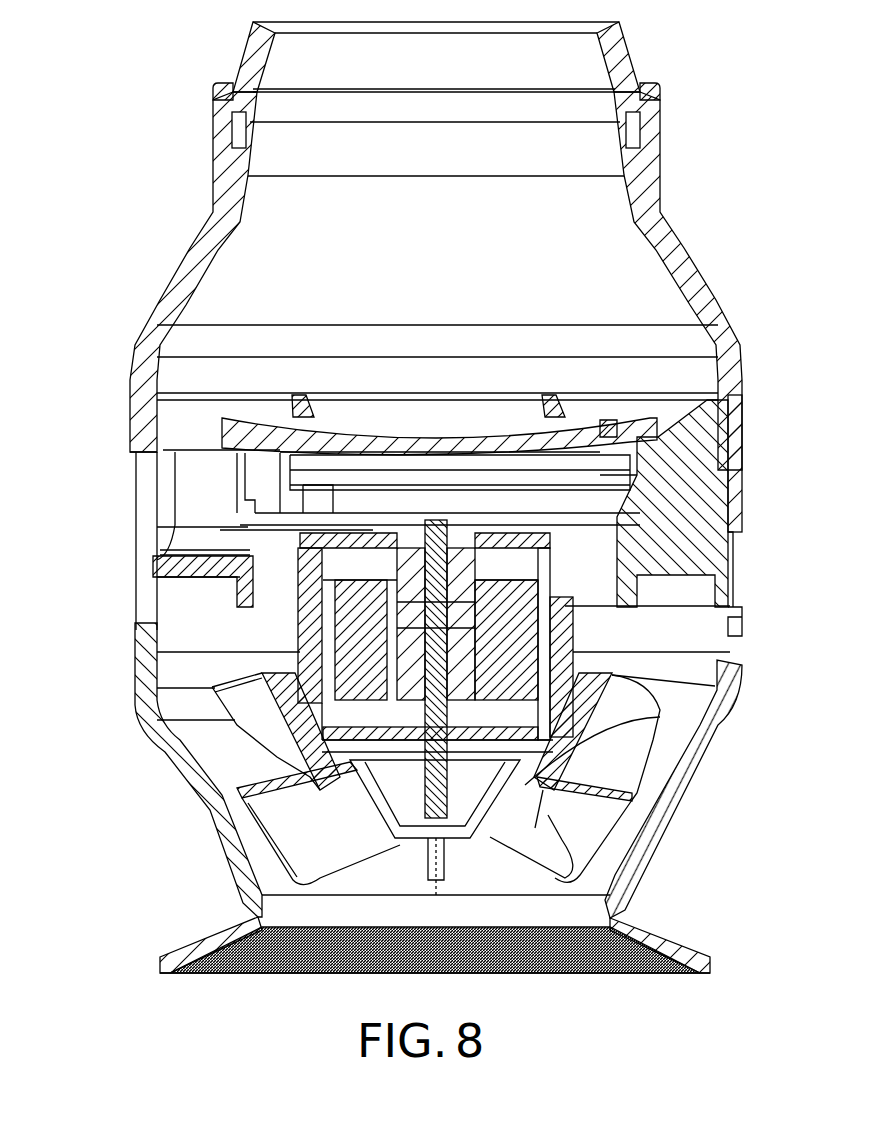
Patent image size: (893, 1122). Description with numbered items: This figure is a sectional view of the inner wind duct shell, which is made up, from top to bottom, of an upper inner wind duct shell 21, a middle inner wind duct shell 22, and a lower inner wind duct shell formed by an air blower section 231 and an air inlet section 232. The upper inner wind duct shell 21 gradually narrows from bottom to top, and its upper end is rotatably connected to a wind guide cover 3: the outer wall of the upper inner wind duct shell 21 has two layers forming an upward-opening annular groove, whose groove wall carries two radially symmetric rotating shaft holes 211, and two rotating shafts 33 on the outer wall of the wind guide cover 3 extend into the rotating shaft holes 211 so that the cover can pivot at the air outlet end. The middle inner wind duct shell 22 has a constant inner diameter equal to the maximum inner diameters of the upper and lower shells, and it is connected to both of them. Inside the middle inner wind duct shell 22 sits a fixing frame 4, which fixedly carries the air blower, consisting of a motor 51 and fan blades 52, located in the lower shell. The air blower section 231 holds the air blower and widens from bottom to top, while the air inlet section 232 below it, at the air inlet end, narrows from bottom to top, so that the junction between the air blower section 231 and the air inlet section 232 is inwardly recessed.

The wind guide cover 3 is at (250, 62).
The rotating shaft 33 is at (225, 92).
The rotating shaft hole 211 is at (230, 130).
The upper inner wind duct shell 21 is at (205, 250).
The middle inner wind duct shell 22 is at (150, 505).
The fixing frame 4 is at (690, 495).
The motor 51 is at (517, 655).
The fan blade 52 is at (540, 805).
The air blower section 231 is at (215, 805).
The air inlet section 232 is at (190, 950).